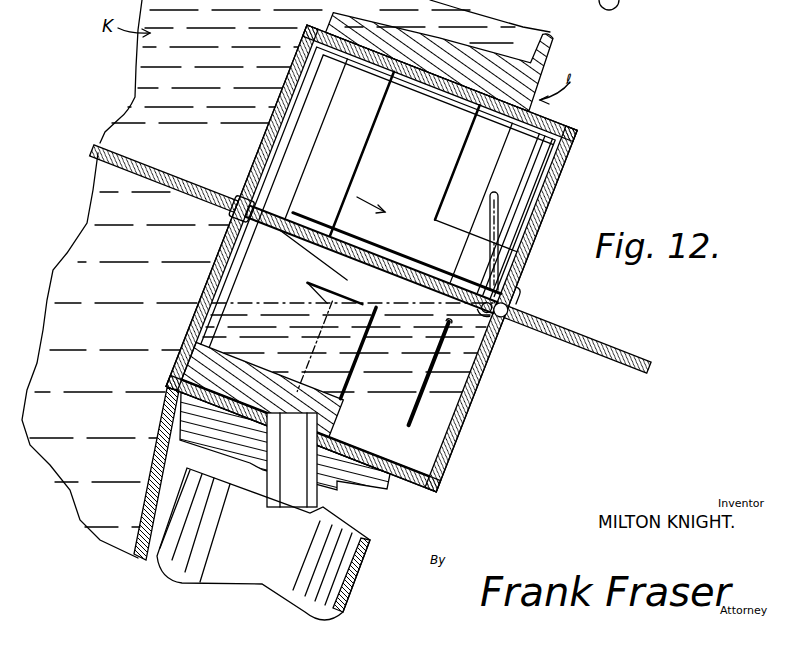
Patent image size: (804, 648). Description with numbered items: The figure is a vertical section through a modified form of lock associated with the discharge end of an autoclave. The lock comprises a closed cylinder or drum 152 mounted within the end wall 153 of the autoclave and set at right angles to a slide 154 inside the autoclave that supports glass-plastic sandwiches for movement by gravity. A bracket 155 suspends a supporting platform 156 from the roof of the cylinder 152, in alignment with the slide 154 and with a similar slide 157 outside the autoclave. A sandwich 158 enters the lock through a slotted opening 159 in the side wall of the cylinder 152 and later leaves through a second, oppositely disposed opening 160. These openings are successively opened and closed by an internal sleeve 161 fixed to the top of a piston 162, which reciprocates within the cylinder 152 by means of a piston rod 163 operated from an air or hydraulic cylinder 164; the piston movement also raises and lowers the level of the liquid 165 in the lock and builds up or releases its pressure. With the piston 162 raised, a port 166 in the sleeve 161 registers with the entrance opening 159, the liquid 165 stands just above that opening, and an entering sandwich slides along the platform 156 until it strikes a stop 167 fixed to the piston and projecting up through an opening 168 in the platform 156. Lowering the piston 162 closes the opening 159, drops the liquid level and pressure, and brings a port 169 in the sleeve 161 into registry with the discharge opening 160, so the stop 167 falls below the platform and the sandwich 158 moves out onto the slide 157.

The closed cylinder or drum 152 is at (533, 230).
The end wall 153 is at (548, 44).
The slide 154 is at (160, 163).
The bracket 155 is at (390, 122).
The supporting platform 156 is at (340, 258).
The slide 157 is at (567, 343).
The sandwich 158 is at (393, 236).
The slotted opening 159 is at (240, 187).
The opening 160 is at (518, 293).
The internal sleeve 161 is at (288, 110).
The piston 162 is at (223, 247).
The piston rod 163 is at (357, 362).
The air or hydraulic cylinder 164 is at (357, 537).
The liquid 165 is at (460, 173).
The port 166 is at (301, 193).
The stop 167 is at (467, 257).
The opening 168 is at (503, 317).
The port 169 is at (568, 165).